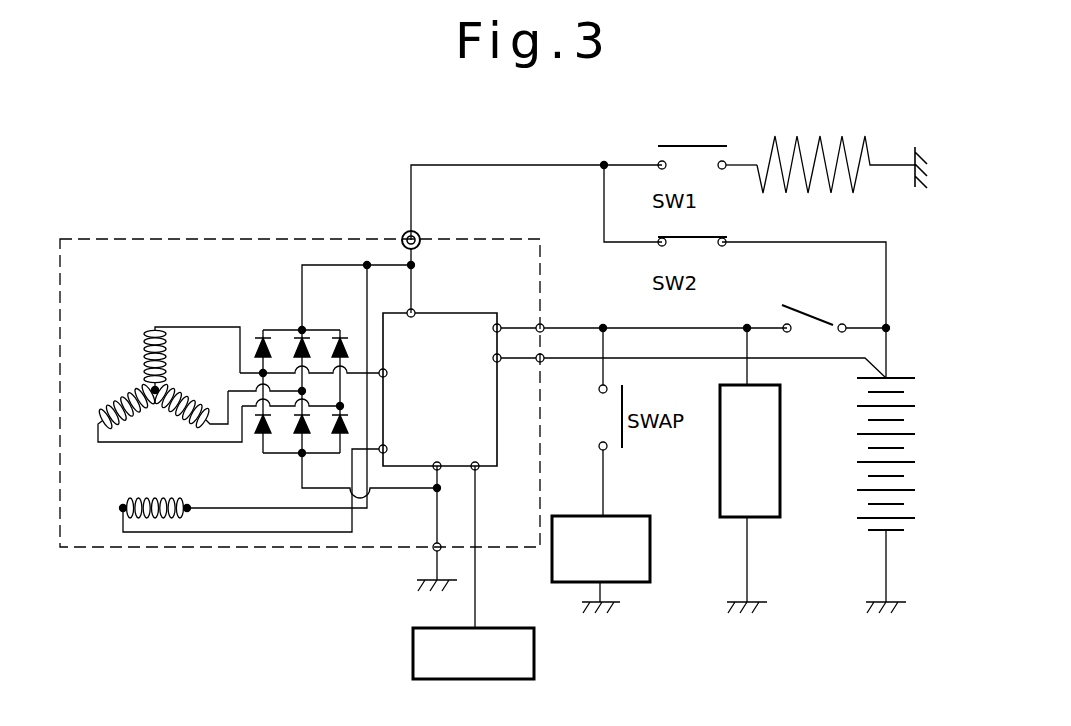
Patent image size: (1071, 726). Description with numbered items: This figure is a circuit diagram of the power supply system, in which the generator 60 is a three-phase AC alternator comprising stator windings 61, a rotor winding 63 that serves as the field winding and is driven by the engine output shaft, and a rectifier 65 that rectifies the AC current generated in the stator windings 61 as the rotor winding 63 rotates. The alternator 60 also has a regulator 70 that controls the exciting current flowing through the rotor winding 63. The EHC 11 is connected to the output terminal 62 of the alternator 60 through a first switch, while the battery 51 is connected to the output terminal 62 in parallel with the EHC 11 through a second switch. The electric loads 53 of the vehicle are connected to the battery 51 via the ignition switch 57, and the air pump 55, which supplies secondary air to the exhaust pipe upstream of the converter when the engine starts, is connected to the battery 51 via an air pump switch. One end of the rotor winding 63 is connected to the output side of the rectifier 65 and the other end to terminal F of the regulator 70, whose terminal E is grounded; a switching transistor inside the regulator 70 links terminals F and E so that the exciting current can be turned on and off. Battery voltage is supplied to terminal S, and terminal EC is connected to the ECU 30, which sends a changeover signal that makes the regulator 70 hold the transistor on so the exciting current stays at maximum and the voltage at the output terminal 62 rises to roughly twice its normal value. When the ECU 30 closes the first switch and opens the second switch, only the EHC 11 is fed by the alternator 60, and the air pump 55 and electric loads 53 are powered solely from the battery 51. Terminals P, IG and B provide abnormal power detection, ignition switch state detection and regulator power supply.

The EHC 11 is at (810, 138).
The ECU 30 is at (534, 652).
The battery 51 is at (858, 496).
The electric loads 53 is at (785, 425).
The air pump 55 is at (650, 548).
The ignition switch 57 is at (808, 318).
The generator 60 is at (215, 238).
The stator windings 61 is at (133, 369).
The output terminal 62 is at (415, 232).
The rotor winding 63 is at (181, 494).
The rectifier 65 is at (269, 307).
The regulator 70 is at (456, 303).